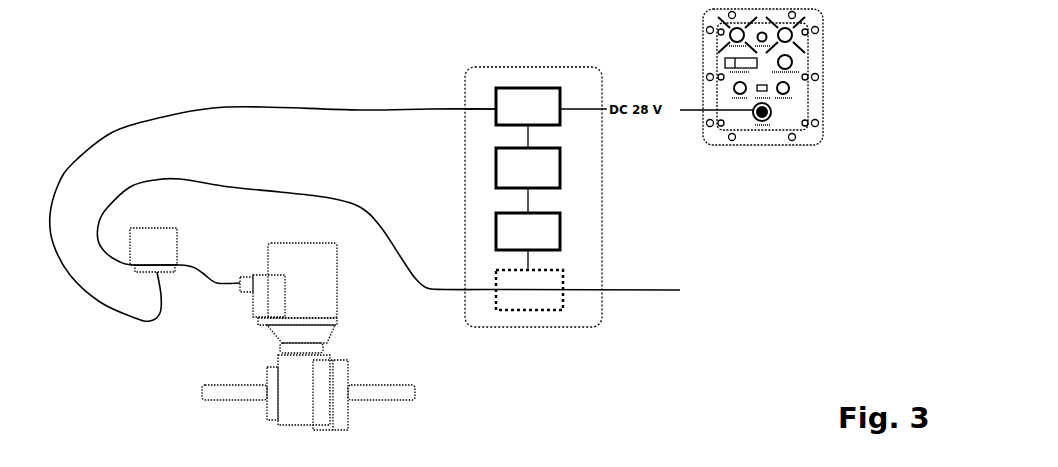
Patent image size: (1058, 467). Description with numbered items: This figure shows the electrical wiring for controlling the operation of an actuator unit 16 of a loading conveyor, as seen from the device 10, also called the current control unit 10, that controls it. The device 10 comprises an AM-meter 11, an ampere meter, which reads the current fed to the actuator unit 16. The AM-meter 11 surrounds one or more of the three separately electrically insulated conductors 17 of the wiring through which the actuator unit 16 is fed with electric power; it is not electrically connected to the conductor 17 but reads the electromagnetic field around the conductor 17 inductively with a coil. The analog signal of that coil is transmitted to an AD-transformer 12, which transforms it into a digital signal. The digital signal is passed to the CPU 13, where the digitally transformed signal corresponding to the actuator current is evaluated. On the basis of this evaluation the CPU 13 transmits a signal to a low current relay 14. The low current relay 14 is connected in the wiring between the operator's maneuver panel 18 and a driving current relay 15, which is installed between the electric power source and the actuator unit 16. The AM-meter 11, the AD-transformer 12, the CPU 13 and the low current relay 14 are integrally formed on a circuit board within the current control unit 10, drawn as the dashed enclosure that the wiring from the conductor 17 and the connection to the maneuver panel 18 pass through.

The device (current control unit) 10 is at (444, 180).
The AM-meter 11 is at (594, 271).
The AD-transformer 12 is at (594, 223).
The CPU 13 is at (594, 168).
The low current relay 14 is at (594, 121).
The driving current relay 15 is at (194, 247).
The actuator unit 16 is at (339, 336).
The conductor 17 is at (638, 319).
The operator's maneuver panel 18 is at (681, 77).